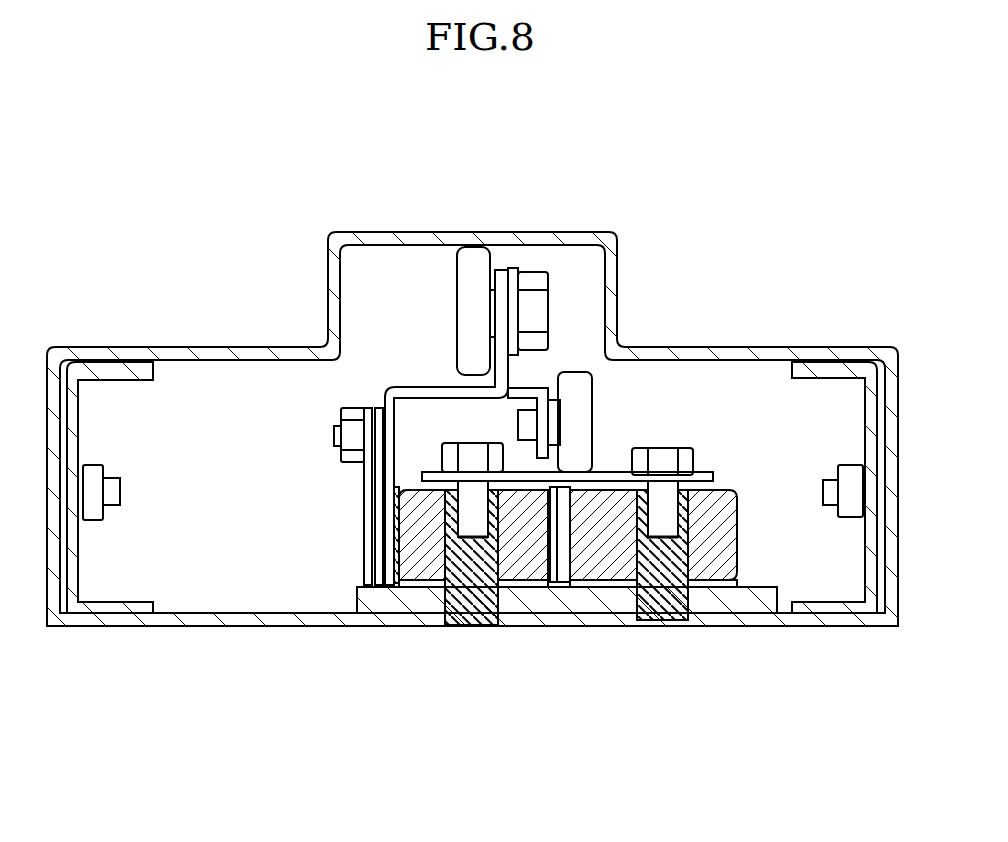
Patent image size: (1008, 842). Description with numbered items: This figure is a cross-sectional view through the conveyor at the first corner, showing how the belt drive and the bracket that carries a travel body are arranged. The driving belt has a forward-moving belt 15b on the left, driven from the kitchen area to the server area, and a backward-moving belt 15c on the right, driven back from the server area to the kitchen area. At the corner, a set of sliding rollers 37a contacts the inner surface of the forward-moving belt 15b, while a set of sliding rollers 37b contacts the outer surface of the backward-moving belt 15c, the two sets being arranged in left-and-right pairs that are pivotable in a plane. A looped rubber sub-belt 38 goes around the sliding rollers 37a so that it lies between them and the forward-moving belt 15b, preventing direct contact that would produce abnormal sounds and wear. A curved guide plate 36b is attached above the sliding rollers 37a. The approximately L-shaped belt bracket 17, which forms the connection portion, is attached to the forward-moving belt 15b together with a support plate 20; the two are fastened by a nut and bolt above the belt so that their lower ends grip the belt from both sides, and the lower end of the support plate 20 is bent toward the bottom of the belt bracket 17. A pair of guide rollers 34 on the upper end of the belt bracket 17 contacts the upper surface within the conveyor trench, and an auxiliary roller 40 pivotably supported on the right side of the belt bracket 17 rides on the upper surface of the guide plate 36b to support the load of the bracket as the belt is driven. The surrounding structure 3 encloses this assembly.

The housing 3 is at (784, 348).
The forward-moving belt 15b is at (393, 586).
The backward-moving belt 15c is at (577, 588).
The belt bracket 17 is at (384, 385).
The support plate 20 is at (367, 478).
The guide rollers 34 is at (473, 272).
The guide plate 36b is at (607, 468).
The sliding rollers 37a is at (423, 560).
The sliding rollers 37b is at (727, 540).
The sub-belt 38 is at (397, 487).
The auxiliary roller 40 is at (576, 389).